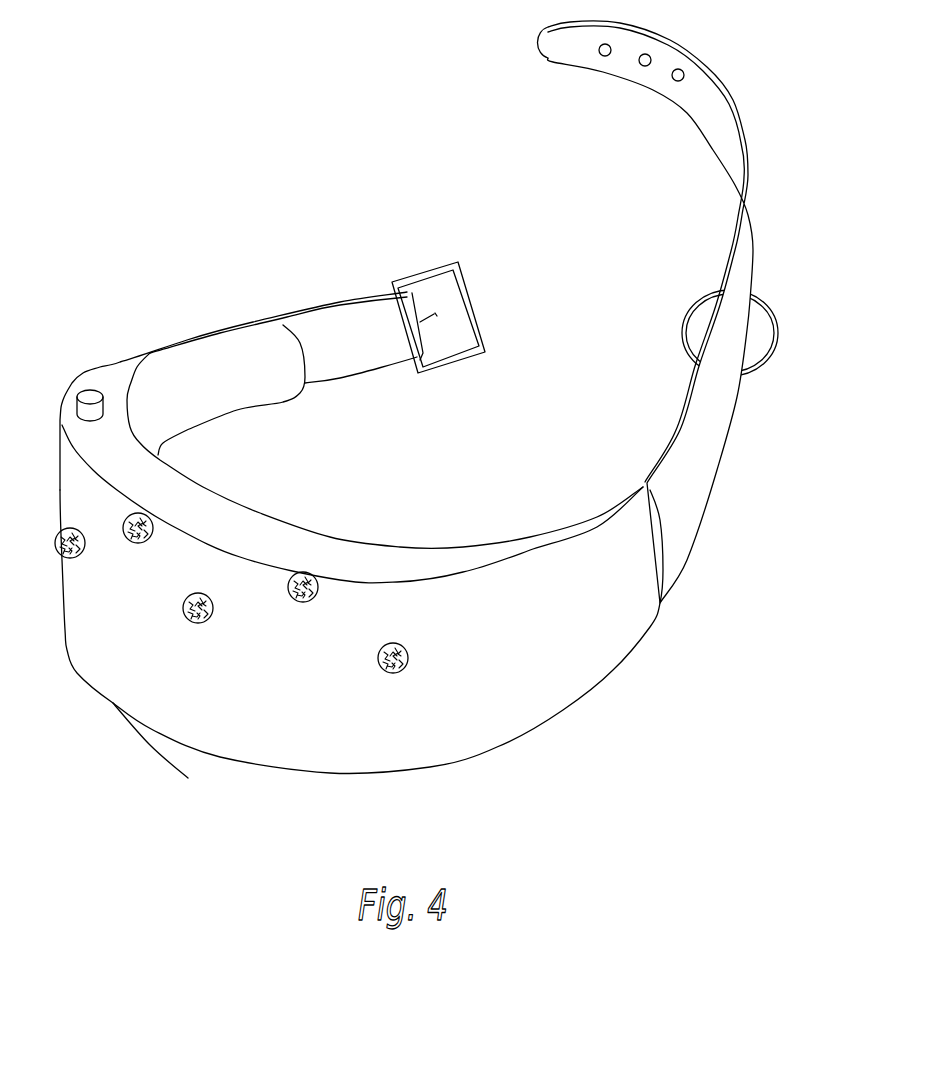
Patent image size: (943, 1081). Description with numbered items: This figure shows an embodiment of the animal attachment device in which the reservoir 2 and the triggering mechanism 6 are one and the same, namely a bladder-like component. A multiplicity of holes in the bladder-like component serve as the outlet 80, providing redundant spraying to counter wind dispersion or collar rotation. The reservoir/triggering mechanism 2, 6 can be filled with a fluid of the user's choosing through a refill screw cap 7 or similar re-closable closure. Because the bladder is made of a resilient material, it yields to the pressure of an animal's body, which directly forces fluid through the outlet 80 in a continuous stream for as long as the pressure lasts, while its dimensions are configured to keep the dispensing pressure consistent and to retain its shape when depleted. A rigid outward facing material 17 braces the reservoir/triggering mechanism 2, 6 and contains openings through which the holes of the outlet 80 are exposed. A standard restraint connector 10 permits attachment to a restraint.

The reservoir 2 is at (351, 422).
The triggering mechanism 6 is at (258, 517).
The refill screw cap 7 is at (90, 392).
The restraint connector 10 is at (777, 321).
The rigid outward facing material 17 is at (415, 737).
The outlet 80 is at (72, 557).